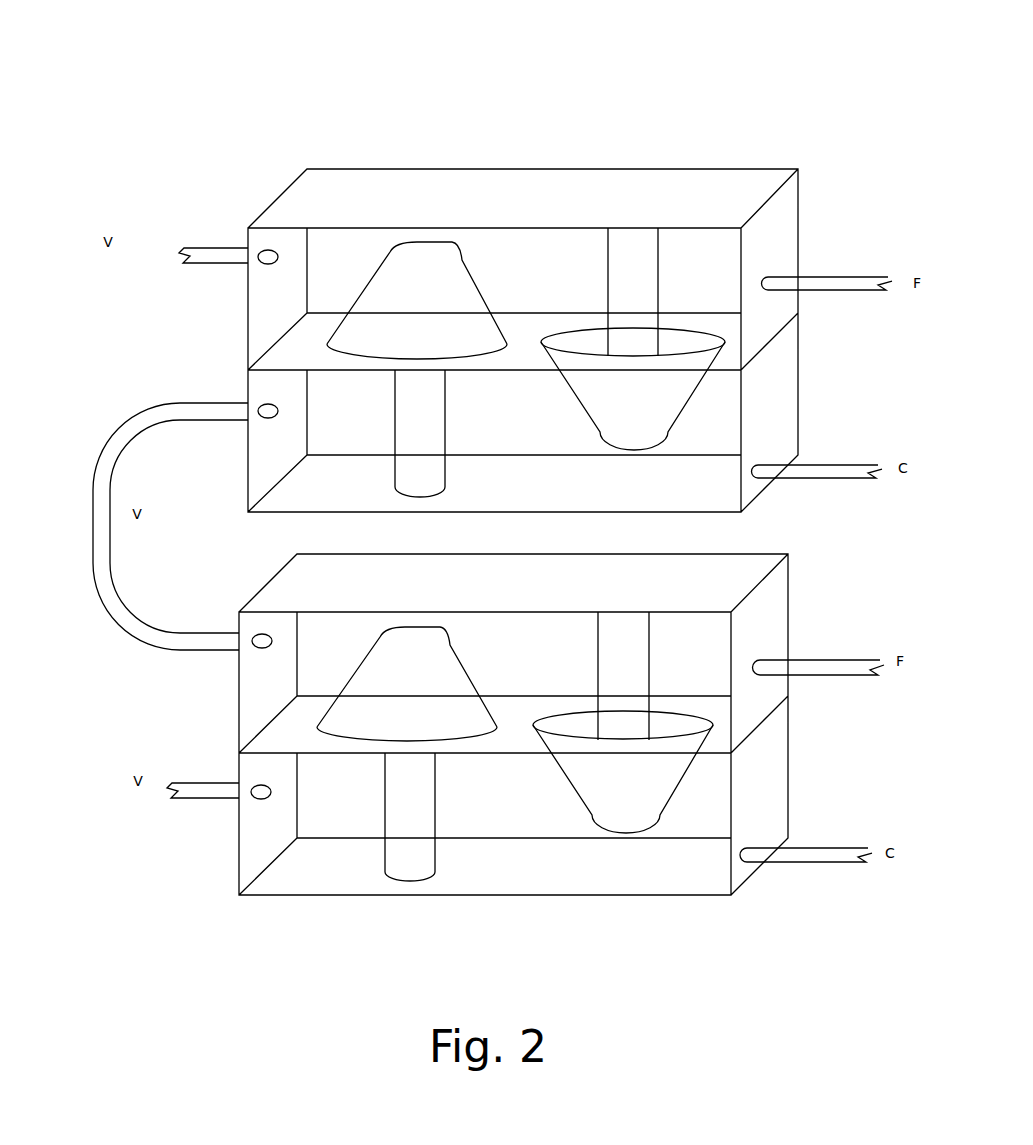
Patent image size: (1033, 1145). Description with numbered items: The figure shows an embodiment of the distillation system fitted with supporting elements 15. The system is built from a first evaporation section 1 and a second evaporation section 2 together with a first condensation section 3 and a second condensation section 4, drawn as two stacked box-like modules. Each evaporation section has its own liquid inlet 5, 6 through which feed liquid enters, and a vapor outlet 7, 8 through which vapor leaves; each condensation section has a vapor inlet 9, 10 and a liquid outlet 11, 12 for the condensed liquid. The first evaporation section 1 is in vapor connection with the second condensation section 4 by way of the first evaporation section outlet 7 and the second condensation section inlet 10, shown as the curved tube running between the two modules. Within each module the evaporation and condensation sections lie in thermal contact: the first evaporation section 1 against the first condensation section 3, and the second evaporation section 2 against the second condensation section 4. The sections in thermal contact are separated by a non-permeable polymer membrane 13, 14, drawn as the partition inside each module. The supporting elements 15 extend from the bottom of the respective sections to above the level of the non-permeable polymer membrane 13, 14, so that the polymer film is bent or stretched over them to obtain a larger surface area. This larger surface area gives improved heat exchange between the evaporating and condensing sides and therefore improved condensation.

The first evaporation section 1 is at (325, 647).
The second evaporation section 2 is at (558, 270).
The first condensation section 3 is at (492, 817).
The second condensation section 4 is at (705, 425).
The liquid inlet 5 is at (810, 670).
The liquid inlet 6 is at (860, 282).
The vapor outlet 7 is at (262, 645).
The vapor outlet 8 is at (215, 258).
The vapor inlet 9 is at (262, 795).
The vapor inlet 10 is at (258, 405).
The liquid outlet 11 is at (808, 858).
The liquid outlet 12 is at (828, 472).
The non-permeable polymer membrane 13 is at (520, 755).
The non-permeable polymer membrane 14 is at (525, 347).
The supporting elements 15 is at (637, 268).